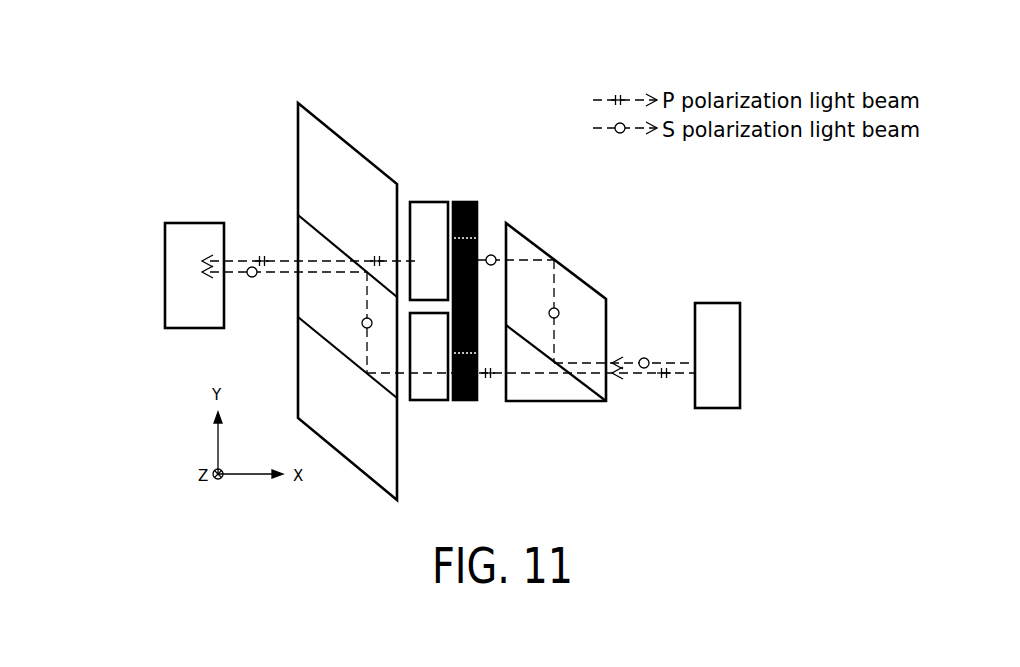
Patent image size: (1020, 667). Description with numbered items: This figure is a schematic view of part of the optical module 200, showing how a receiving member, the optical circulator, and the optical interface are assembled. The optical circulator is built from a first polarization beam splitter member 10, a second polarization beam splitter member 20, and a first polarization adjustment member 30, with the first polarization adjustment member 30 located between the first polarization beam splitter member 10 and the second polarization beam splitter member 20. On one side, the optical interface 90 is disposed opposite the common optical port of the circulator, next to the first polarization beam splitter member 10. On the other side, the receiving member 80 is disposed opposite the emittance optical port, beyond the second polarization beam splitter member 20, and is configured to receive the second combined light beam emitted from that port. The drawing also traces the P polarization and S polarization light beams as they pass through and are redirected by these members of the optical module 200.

The optical module 200 is at (502, 95).
The first polarization beam splitter member 10 is at (588, 264).
The second polarization beam splitter member 20 is at (370, 146).
The first polarization adjustment member 30 is at (454, 188).
The receiving member 80 is at (155, 281).
The optical interface 90 is at (710, 300).